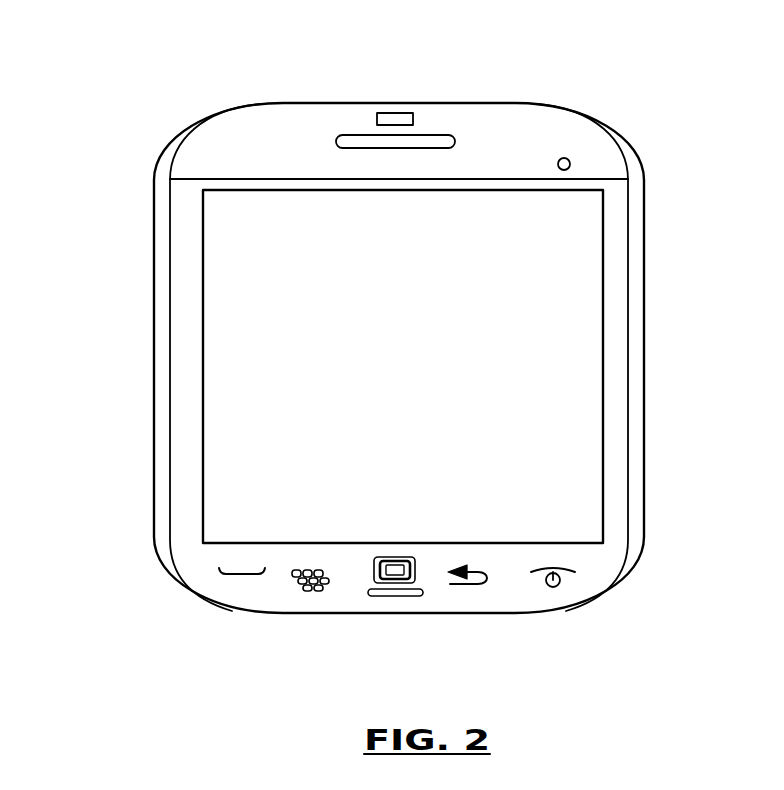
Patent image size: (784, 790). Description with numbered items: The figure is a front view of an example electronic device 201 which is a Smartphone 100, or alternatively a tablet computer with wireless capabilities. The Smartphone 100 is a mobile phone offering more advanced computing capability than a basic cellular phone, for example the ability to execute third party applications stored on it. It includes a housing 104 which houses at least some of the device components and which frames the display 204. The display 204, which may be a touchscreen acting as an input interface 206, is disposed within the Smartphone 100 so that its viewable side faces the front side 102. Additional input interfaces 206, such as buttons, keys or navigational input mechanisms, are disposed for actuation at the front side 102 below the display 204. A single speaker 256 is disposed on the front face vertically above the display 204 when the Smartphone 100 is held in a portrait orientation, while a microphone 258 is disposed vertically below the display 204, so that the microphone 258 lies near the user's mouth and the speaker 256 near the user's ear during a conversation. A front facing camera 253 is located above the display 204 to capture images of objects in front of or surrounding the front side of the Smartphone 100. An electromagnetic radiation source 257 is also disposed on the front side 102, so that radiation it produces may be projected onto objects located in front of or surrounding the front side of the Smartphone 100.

The Smartphone 100 is at (168, 74).
The electronic device 201 is at (244, 74).
The front side 102 is at (192, 559).
The housing 104 is at (644, 212).
The display 204 is at (202, 305).
The input interface 206 is at (202, 388).
The front facing camera 253 is at (392, 112).
The speaker 256 is at (453, 135).
The electromagnetic radiation source 257 is at (565, 158).
The microphone 258 is at (407, 596).